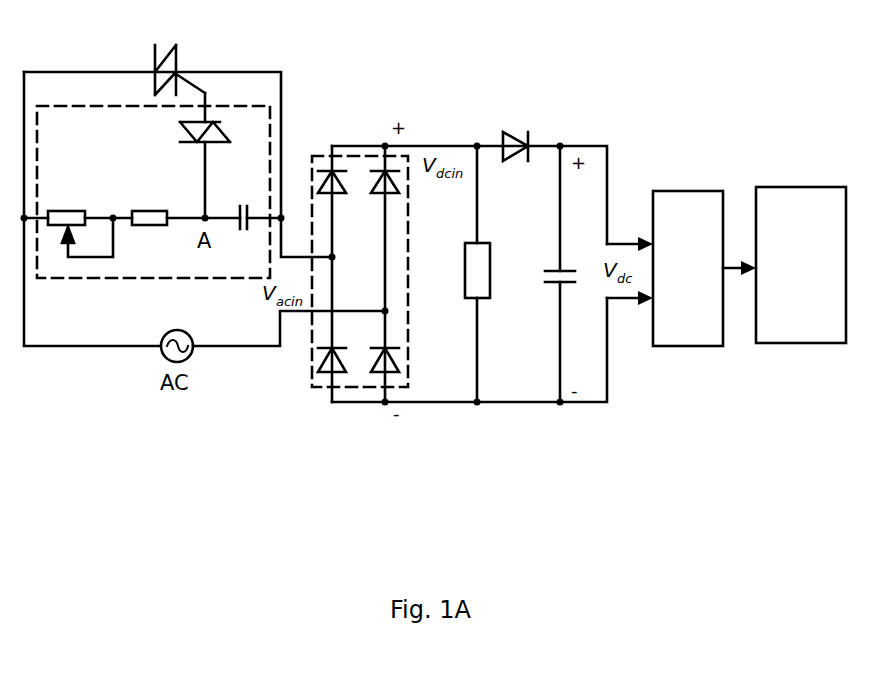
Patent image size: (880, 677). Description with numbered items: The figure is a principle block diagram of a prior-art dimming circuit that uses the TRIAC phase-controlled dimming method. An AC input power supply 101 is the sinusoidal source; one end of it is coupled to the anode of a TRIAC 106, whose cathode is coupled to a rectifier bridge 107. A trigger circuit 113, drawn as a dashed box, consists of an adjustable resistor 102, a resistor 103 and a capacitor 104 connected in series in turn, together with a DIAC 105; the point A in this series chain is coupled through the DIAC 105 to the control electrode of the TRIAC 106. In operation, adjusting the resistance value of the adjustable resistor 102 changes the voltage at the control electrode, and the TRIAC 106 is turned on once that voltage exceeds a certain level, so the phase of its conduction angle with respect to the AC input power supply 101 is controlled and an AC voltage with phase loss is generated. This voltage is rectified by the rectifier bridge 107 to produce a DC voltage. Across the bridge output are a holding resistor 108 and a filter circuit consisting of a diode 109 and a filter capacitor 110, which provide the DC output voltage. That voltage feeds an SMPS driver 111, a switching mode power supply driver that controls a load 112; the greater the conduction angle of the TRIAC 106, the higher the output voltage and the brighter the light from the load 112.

The AC input power supply 101 is at (180, 333).
The adjustable resistor 102 is at (80, 217).
The resistor 103 is at (148, 201).
The capacitor 104 is at (243, 201).
The DIAC 105 is at (223, 129).
The TRIAC 106 is at (176, 59).
The rectifier bridge 107 is at (360, 253).
The holding resistor 108 is at (490, 286).
The diode 109 is at (521, 128).
The filter capacitor 110 is at (548, 262).
The SMPS driver 111 is at (688, 268).
The load 112 is at (801, 265).
The trigger circuit 113 is at (153, 177).